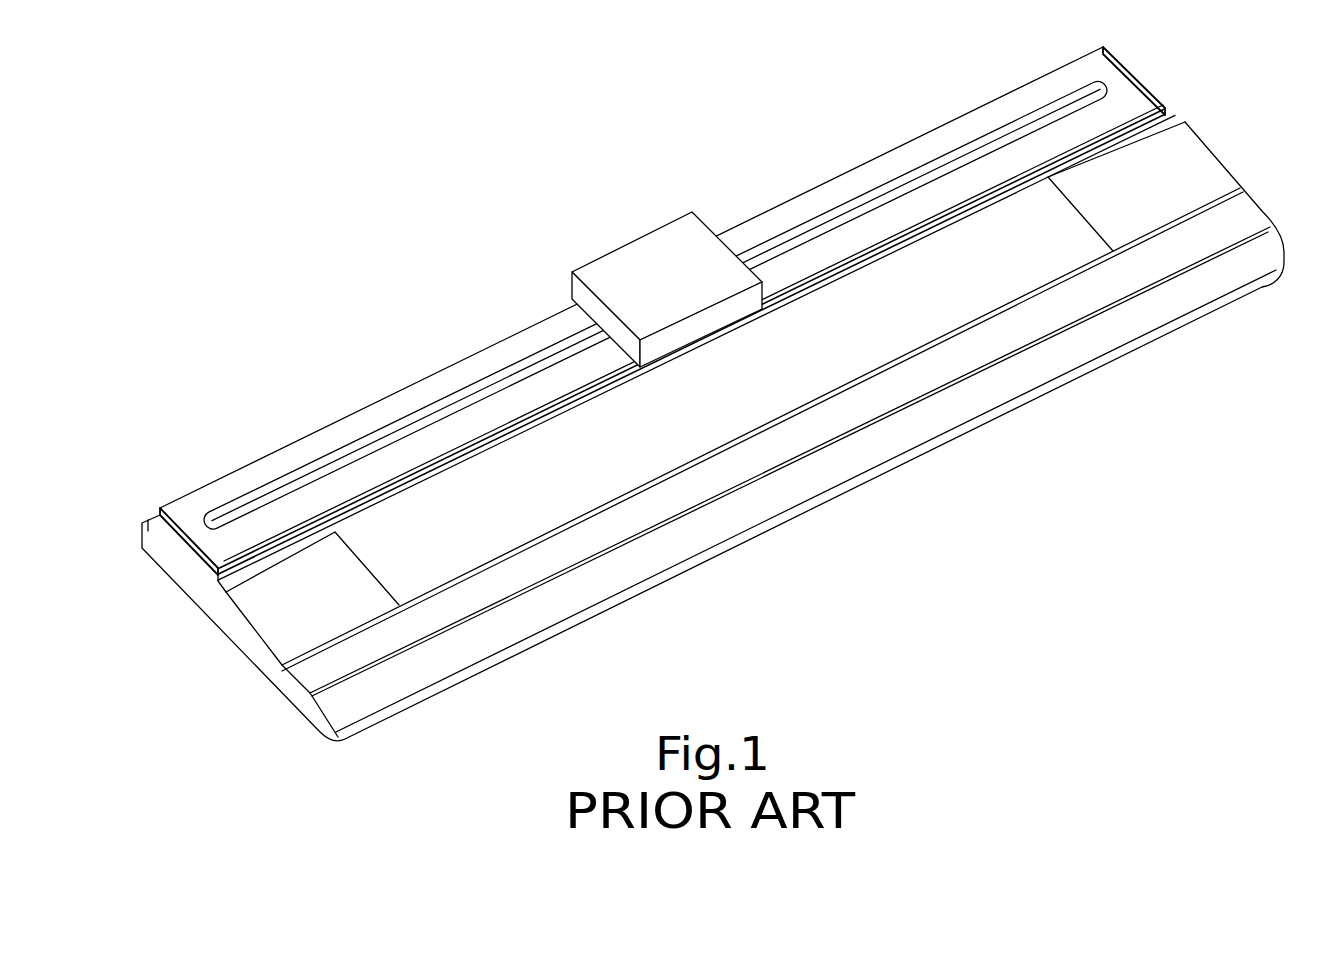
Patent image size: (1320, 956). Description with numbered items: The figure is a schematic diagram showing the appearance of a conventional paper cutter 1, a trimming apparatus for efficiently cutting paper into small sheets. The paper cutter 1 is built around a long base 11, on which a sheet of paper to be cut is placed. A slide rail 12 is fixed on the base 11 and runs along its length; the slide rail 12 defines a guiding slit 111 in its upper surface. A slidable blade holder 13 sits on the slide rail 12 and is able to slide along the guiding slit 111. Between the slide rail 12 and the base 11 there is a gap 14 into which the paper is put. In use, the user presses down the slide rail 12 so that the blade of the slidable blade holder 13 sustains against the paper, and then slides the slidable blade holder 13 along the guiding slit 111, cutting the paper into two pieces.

The paper cutter 1 is at (719, 394).
The base 11 is at (1190, 167).
The slide rail 12 is at (967, 132).
The slidable blade holder 13 is at (640, 260).
The gap 14 is at (412, 478).
The guiding slit 111 is at (832, 225).